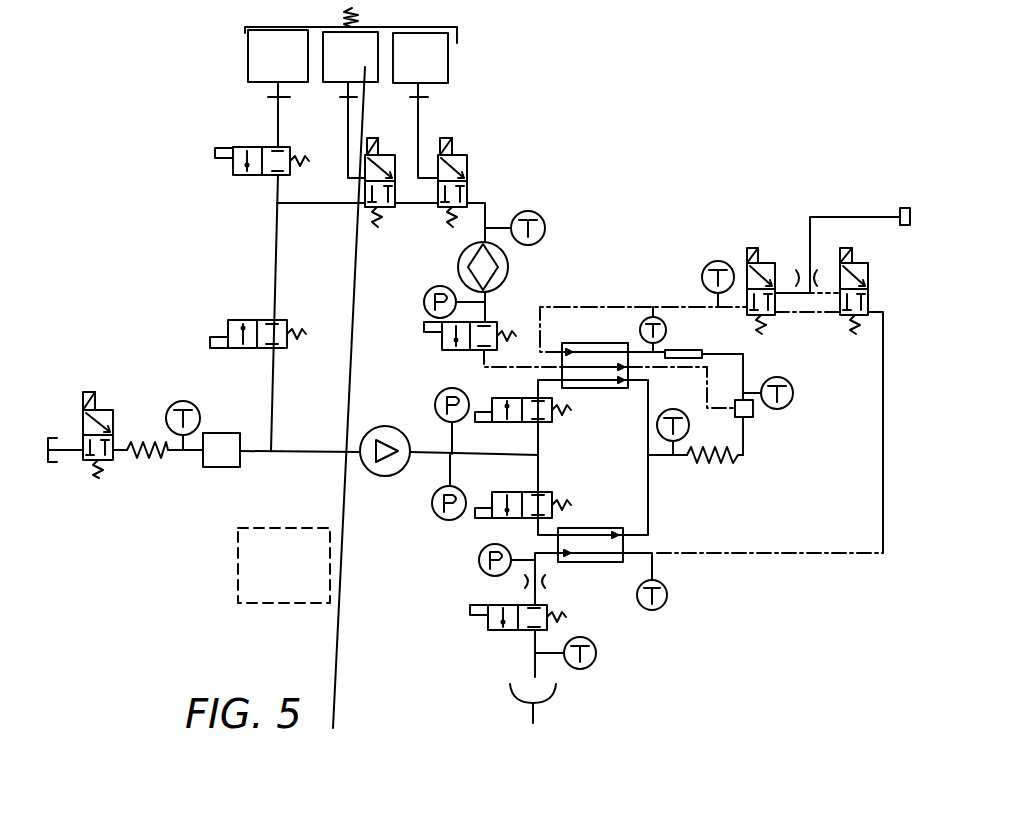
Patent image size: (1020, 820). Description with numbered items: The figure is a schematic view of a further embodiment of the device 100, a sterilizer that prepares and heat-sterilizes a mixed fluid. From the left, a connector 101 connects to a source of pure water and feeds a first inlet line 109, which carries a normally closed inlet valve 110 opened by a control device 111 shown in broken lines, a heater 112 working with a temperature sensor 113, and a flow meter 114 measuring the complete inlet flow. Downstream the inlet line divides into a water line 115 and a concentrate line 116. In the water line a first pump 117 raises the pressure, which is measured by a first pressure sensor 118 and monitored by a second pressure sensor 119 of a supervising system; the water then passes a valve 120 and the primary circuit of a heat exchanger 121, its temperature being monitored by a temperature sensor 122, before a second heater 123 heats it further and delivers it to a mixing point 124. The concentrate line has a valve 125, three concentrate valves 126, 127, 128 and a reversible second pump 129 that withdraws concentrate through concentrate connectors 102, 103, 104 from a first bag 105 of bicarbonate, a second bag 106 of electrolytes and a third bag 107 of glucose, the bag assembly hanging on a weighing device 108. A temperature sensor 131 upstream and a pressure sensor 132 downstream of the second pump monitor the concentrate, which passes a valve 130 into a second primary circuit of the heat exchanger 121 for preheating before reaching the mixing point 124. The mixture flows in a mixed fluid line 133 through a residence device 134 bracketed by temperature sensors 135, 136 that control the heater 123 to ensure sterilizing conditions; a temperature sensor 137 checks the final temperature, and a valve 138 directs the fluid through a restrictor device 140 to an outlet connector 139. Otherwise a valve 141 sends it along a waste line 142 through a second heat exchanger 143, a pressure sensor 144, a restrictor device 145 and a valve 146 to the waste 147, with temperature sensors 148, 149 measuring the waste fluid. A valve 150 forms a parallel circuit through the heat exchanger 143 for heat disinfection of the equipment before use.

The device 100 is at (606, 168).
The connector 101 is at (52, 428).
The concentrate connector 102 is at (268, 98).
The concentrate connector 103 is at (346, 98).
The concentrate connector 104 is at (428, 98).
The first bag 105 is at (250, 52).
The second bag 106 is at (330, 33).
The third bag 107 is at (450, 55).
The weighing device 108 is at (360, 12).
The first inlet line 109 is at (65, 455).
The inlet valve 110 is at (112, 462).
The control device 111 is at (237, 592).
The heater 112 is at (156, 462).
The temperature sensor 113 is at (172, 402).
The flow meter 114 is at (226, 432).
The water line 115 is at (302, 458).
The concentrate line 116 is at (282, 407).
The first pump 117 is at (372, 474).
The first pressure sensor 118 is at (438, 398).
The second pressure sensor 119 is at (434, 522).
The valve 120 is at (548, 426).
The heat exchanger 121 is at (600, 390).
The temperature sensor 122 is at (695, 395).
The second heater 123 is at (726, 473).
The mixing point 124 is at (755, 420).
The valve 125 is at (242, 319).
The concentrate valve 126 is at (252, 176).
The concentrate valve 127 is at (362, 226).
The concentrate valve 128 is at (470, 175).
The second pump 129 is at (510, 270).
The valve 130 is at (440, 341).
The temperature sensor 131 is at (535, 213).
The pressure sensor 132 is at (425, 298).
The mixed fluid line 133 is at (747, 372).
The residence device 134 is at (682, 349).
The temperature sensor 135 is at (790, 383).
The temperature sensor 136 is at (652, 306).
The temperature sensor 137 is at (708, 262).
The valve 138 is at (748, 250).
The outlet connector 139 is at (900, 208).
The restrictor device 140 is at (792, 262).
The valve 141 is at (870, 280).
The waste line 142 is at (882, 416).
The second heat exchanger 143 is at (600, 527).
The pressure sensor 144 is at (479, 566).
The restrictor device 145 is at (548, 580).
The valve 146 is at (505, 632).
The waste 147 is at (560, 695).
The temperature sensor 148 is at (668, 598).
The temperature sensor 149 is at (598, 658).
The valve 150 is at (551, 488).